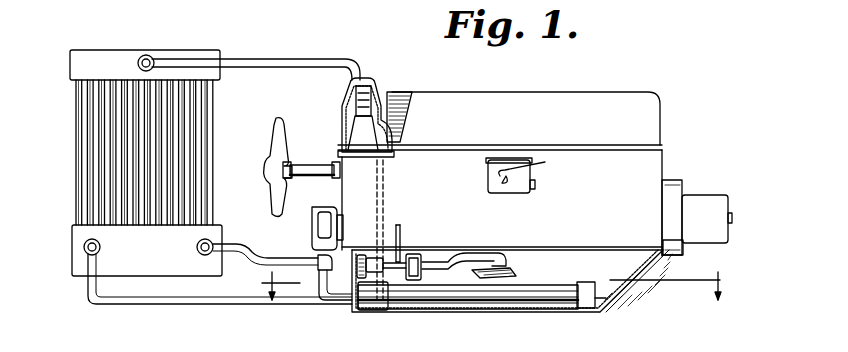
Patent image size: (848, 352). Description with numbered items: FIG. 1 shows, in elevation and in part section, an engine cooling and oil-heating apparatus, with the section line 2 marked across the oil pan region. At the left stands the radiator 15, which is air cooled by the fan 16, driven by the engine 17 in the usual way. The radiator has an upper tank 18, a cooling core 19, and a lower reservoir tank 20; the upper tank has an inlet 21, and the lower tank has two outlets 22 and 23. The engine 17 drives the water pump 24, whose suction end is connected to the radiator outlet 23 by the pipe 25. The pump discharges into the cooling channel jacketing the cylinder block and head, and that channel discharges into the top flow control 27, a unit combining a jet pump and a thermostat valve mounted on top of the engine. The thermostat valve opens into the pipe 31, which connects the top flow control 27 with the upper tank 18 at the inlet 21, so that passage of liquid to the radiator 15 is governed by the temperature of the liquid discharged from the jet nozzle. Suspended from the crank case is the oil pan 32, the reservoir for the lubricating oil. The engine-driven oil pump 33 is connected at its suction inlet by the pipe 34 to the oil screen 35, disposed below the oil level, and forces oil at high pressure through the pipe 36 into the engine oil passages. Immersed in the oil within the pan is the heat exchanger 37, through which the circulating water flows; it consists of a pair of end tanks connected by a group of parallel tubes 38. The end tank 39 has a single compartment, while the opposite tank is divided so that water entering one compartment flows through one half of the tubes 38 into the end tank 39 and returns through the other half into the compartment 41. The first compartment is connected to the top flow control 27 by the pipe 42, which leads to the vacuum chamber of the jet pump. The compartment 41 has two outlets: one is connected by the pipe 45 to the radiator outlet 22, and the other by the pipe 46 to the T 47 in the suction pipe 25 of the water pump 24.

The section line 2- 2 is at (491, 285).
The radiator 15 is at (70, 163).
The fan 16 is at (270, 140).
The engine 17 is at (668, 170).
The upper tank 18 is at (70, 60).
The cooling core 19 is at (76, 118).
The lower reservoir tank 20 is at (160, 273).
The inlet 21 is at (148, 55).
The outlet 22 is at (84, 246).
The outlet 23 is at (197, 247).
The water pump 24 is at (322, 210).
The pipe 25 is at (264, 256).
The top flow control 27 is at (342, 124).
The pipe 31 is at (290, 58).
The oil pan 32 is at (630, 282).
The oil pump 33 is at (416, 256).
The pipe 34 is at (468, 254).
The oil screen 35 is at (508, 268).
The pipe 36 is at (398, 226).
The heat exchanger 37 is at (432, 298).
The tubes 38 is at (497, 300).
The end tank 39 is at (612, 302).
The compartment 41 is at (370, 304).
The pipe 42 is at (390, 185).
The pipe 45 is at (231, 306).
The pipe 46 is at (318, 294).
The T 47 is at (314, 258).